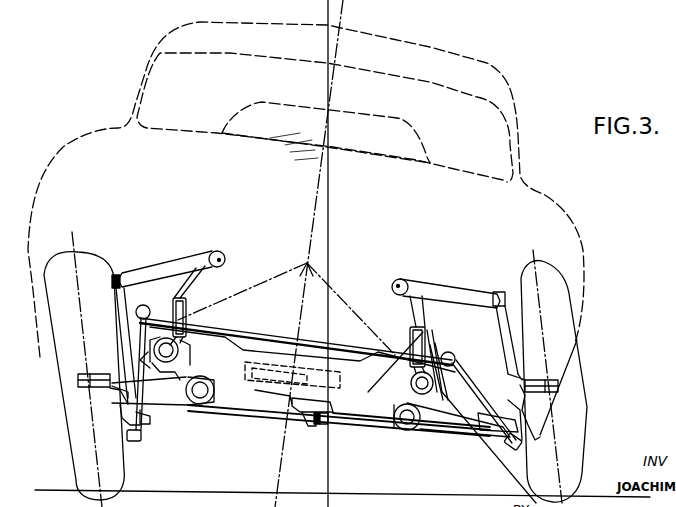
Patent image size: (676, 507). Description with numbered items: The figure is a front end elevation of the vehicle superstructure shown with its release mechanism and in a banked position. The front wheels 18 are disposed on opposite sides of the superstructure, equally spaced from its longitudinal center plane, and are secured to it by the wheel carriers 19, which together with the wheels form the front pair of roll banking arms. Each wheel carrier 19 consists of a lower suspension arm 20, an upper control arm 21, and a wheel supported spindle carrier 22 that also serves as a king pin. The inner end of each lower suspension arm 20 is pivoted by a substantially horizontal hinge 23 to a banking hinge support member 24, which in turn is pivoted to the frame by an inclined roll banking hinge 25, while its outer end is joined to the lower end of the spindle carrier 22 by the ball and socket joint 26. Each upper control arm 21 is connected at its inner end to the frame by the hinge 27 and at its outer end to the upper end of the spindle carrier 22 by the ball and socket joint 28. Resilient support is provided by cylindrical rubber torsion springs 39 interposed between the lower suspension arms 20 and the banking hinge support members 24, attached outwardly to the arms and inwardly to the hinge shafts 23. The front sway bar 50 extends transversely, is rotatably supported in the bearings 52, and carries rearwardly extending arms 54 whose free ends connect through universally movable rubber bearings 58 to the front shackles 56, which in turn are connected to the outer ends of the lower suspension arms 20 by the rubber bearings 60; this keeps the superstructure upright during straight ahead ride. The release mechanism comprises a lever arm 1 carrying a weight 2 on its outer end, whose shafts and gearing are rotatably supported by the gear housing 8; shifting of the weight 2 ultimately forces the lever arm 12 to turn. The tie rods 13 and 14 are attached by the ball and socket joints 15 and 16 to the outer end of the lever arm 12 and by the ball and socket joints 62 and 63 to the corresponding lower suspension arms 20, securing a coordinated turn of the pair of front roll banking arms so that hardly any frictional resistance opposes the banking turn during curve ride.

The lever arm 1 is at (280, 373).
The weight 2 is at (257, 363).
The gear housing 8 is at (257, 392).
The lever arm 12 is at (293, 402).
The tie rod 13 is at (373, 427).
The tie rod 14 is at (260, 420).
The ball and socket joint 15 is at (323, 425).
The ball and socket joint 16 is at (308, 426).
The wheel 18 is at (72, 443).
The wheel carrier 19 is at (171, 455).
The lower suspension arm 20 is at (180, 401).
The upper control arm 21 is at (157, 266).
The spindle carrier 22 is at (117, 320).
The horizontal hinge 23 is at (207, 408).
The banking hinge support member 24 is at (172, 355).
The roll banking hinge 25 is at (157, 353).
The ball and socket joint 26 is at (127, 416).
The hinge 27 is at (209, 252).
The ball and socket joint 28 is at (117, 273).
The rubber torsion spring 39 is at (204, 397).
The front sway bar 50 is at (360, 347).
The bearing 52 is at (187, 312).
The sway bar arm 54 is at (153, 320).
The front shackle 56 is at (121, 391).
The rubber bearing 58 is at (143, 309).
The rubber bearing 60 is at (128, 436).
The ball and socket joint 62 is at (487, 436).
The ball and socket joint 63 is at (146, 421).